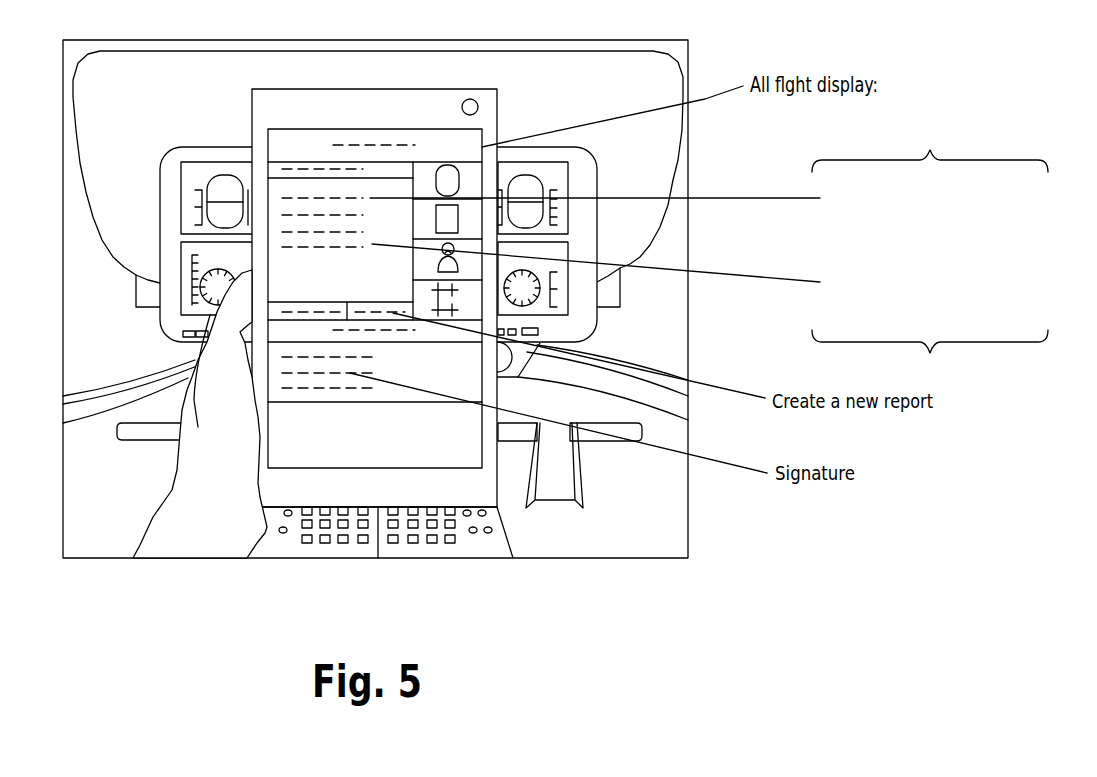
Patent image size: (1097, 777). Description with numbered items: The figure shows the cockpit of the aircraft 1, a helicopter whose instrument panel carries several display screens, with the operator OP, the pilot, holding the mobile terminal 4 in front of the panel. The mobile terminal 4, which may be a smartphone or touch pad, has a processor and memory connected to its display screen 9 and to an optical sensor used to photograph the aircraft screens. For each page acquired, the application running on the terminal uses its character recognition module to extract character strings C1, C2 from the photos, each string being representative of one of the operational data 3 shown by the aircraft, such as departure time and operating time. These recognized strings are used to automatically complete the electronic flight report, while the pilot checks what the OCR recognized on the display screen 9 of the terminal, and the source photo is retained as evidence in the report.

The aircraft 1 is at (558, 530).
The operational data 3 is at (1013, 233).
The mobile terminal 4 is at (412, 485).
The display screen 9 is at (330, 468).
The operator OP is at (215, 482).
The character string C1 is at (724, 180).
The character string C2 is at (710, 313).